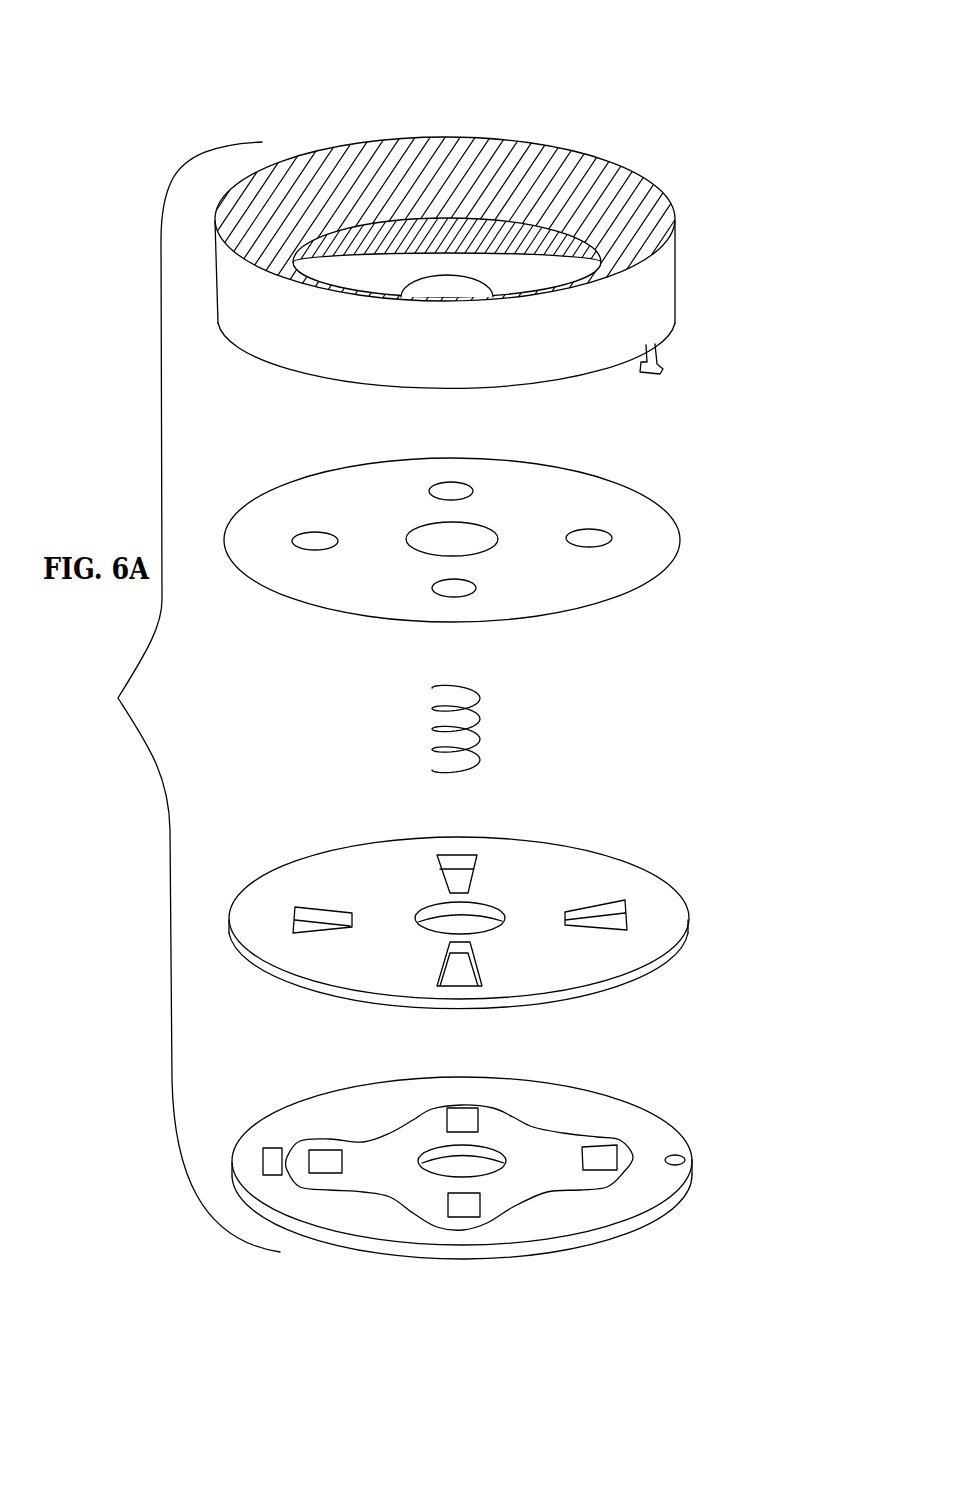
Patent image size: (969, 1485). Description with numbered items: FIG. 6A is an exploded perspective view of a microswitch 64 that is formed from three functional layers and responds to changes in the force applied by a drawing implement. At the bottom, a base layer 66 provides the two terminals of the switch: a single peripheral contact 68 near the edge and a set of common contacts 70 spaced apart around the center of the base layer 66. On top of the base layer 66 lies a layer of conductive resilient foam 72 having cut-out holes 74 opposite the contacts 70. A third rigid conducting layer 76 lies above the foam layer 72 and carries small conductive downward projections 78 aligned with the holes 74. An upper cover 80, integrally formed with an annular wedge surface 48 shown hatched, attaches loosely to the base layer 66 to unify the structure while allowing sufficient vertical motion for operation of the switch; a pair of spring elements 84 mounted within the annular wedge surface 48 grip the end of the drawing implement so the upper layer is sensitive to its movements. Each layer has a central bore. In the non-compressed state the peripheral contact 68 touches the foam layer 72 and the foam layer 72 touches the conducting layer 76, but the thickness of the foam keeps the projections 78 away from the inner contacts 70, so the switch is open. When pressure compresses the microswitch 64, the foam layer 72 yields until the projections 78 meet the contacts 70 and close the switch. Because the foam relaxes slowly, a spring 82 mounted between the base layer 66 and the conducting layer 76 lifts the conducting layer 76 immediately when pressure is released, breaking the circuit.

The microswitch 64 is at (720, 88).
The upper cover 80 is at (446, 226).
The spring elements 84 is at (350, 226).
The annular wedge surface 48 is at (537, 210).
The rigid conducting layer 76 is at (484, 550).
The conductive downward projections 78 is at (590, 545).
The spring 82 is at (348, 728).
The conductive resilient foam layer 72 is at (501, 915).
The cut-out holes 74 is at (625, 902).
The base layer 66 is at (492, 1197).
The common contacts 70 is at (345, 1175).
The peripheral contact 68 is at (270, 1175).